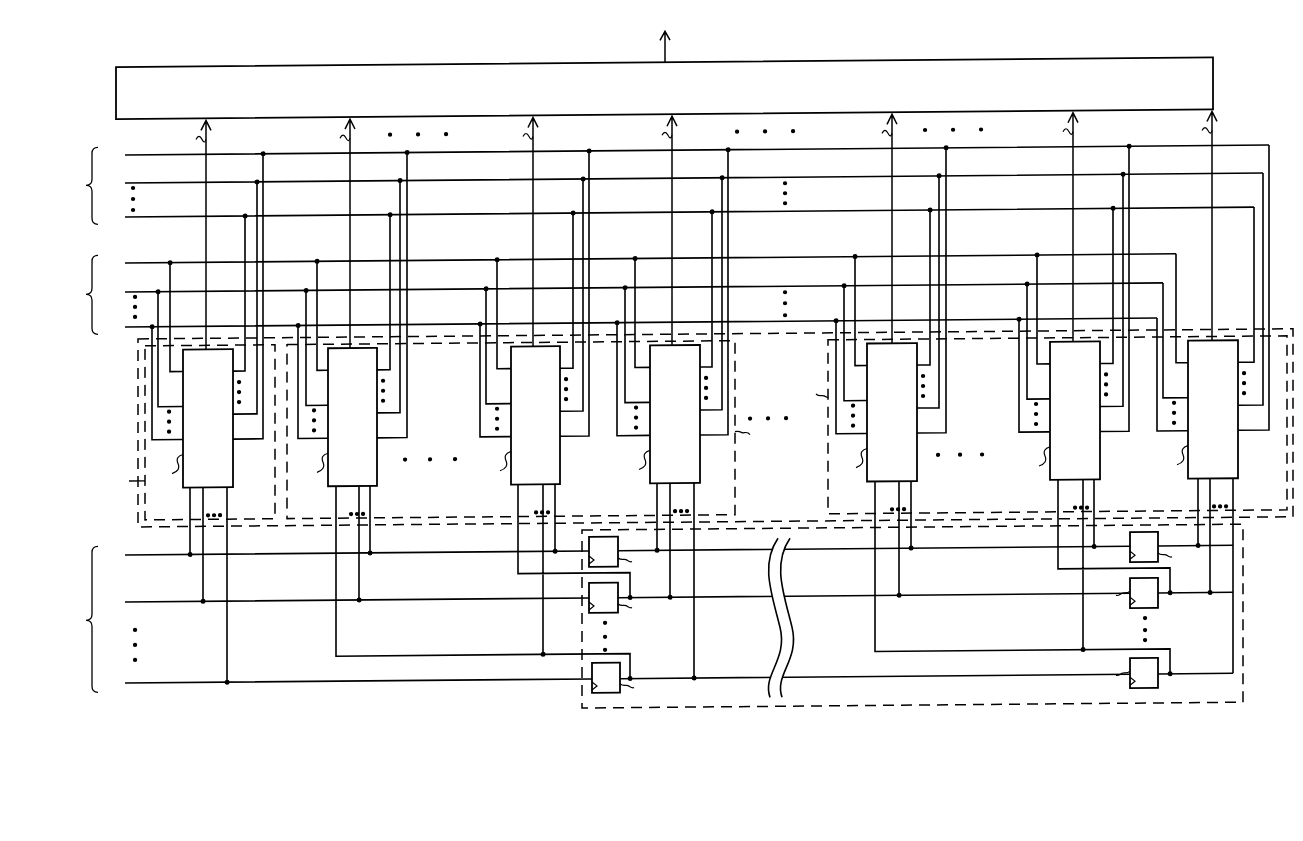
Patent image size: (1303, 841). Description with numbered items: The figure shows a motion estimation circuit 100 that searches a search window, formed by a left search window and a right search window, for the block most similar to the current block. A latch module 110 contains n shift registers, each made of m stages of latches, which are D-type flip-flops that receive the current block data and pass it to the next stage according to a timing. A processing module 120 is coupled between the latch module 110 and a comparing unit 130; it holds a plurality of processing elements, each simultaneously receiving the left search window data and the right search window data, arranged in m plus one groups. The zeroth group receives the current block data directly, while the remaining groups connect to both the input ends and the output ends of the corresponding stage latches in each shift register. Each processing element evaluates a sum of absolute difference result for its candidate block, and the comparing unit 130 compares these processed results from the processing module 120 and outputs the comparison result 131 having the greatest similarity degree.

The motion estimation circuit 100 is at (678, 405).
The latch module 110 is at (930, 713).
The processing module 120 is at (138, 507).
The comparing unit 130 is at (117, 95).
The comparison result 131 is at (665, 34).